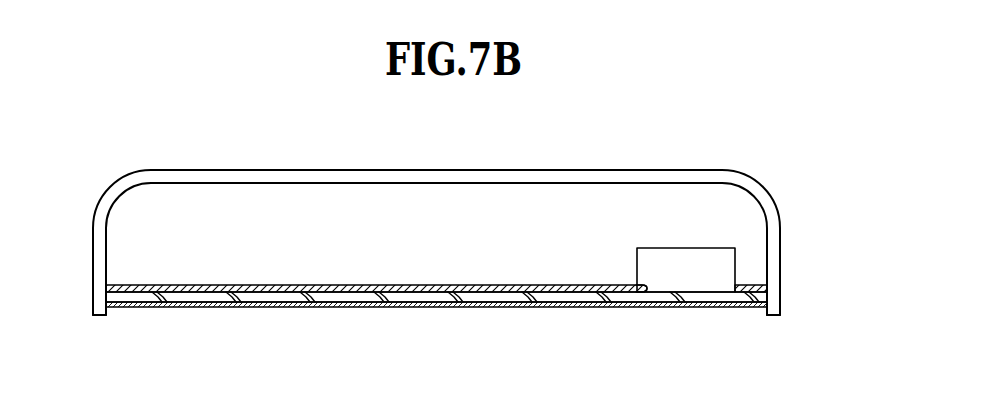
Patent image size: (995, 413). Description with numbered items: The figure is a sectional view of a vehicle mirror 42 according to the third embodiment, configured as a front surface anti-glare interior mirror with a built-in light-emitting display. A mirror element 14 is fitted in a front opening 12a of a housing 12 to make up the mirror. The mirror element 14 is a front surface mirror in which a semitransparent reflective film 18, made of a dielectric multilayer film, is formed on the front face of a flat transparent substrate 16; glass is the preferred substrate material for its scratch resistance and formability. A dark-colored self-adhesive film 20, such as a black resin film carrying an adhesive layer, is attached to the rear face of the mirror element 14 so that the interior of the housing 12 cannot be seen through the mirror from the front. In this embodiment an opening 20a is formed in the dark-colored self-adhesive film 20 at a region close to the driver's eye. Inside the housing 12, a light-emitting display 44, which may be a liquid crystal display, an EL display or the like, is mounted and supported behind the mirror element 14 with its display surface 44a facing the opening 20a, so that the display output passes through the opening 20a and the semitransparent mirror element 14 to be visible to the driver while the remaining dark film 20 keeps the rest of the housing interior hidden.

The housing 12 is at (440, 248).
The front opening 12a is at (762, 317).
The mirror element 14 is at (436, 341).
The transparent substrate 16 is at (250, 306).
The semitransparent reflective film 18 is at (436, 343).
The dark-colored self-adhesive film 20 is at (436, 339).
The opening 20a is at (646, 293).
The vehicle mirror 42 is at (449, 234).
The light-emitting display 44 is at (723, 264).
The display surface 44a is at (690, 293).